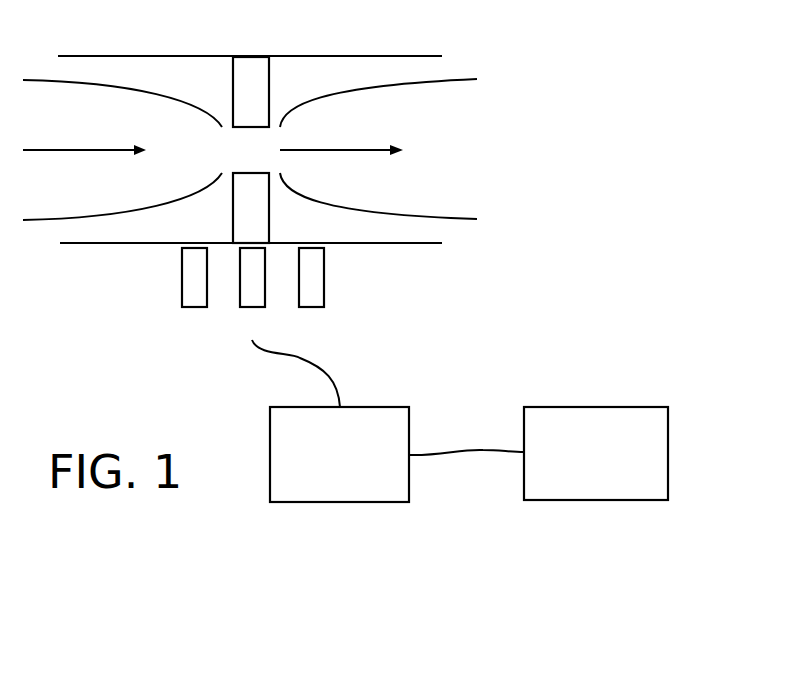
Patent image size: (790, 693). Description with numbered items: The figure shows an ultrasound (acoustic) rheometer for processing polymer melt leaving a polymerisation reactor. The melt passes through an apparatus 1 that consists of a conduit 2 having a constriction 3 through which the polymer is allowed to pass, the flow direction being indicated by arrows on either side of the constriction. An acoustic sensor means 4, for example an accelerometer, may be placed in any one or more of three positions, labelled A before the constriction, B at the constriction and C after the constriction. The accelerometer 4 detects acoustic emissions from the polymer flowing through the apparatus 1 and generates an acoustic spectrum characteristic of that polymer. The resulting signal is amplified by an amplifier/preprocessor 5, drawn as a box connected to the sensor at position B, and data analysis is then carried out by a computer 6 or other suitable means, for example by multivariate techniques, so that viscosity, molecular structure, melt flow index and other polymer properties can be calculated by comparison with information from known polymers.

The apparatus 1 is at (250, 170).
The conduit 2 is at (422, 56).
The constriction 3 is at (245, 148).
The acoustic sensor means 4 is at (325, 278).
The amplifier/preprocessor 5 is at (270, 426).
The computer 6 is at (650, 407).